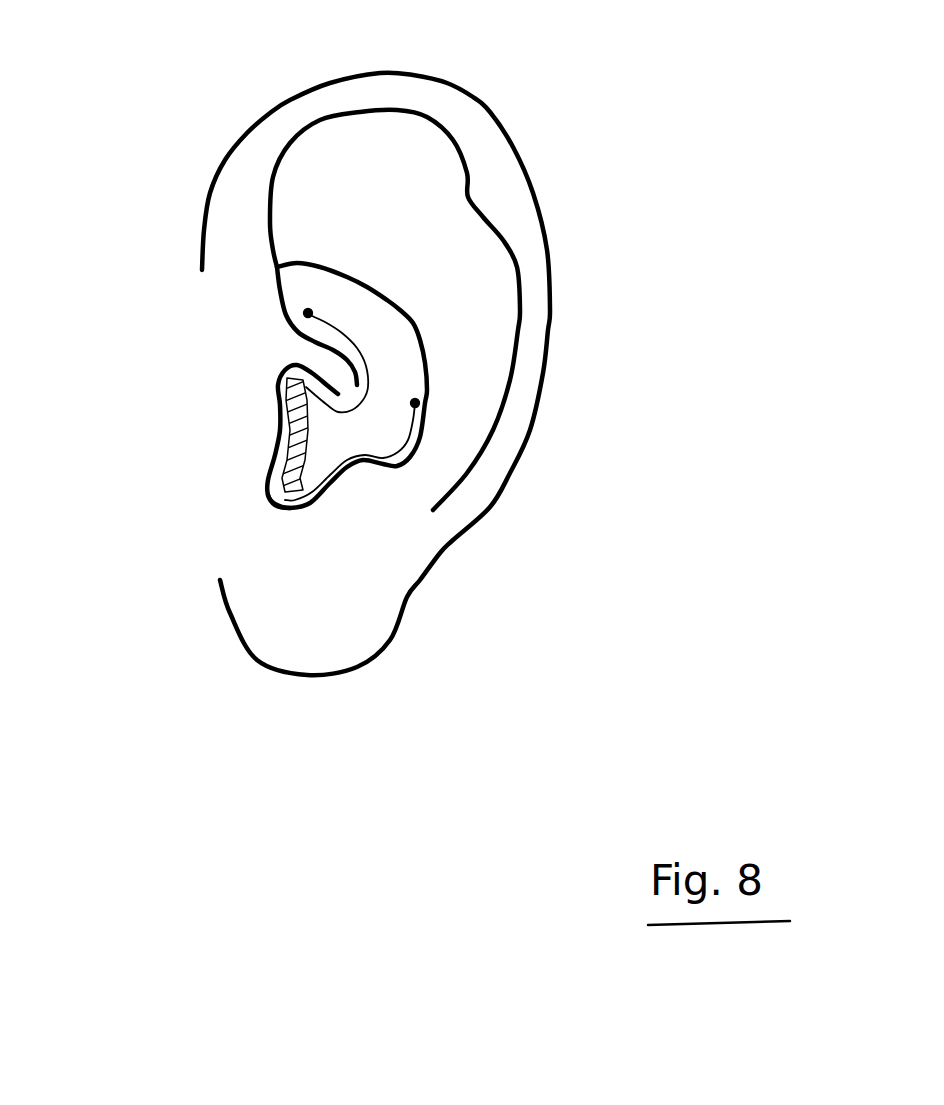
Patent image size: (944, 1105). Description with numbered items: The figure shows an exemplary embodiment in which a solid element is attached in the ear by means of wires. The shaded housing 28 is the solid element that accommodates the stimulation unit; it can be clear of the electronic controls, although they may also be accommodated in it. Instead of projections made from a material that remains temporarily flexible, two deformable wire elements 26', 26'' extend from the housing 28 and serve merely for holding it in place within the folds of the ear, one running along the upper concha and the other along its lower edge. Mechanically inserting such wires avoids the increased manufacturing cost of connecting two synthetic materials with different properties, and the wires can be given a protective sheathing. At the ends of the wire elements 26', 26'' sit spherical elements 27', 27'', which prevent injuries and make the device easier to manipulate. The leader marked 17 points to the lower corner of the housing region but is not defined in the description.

The spherical element 27'' is at (184, 233).
The deformable wire element 26'' is at (503, 213).
The spherical element 27' is at (589, 352).
The deformable wire element 26' is at (429, 560).
The housing 28 is at (295, 433).
The ear canal entrance / tragus region 17 is at (270, 502).